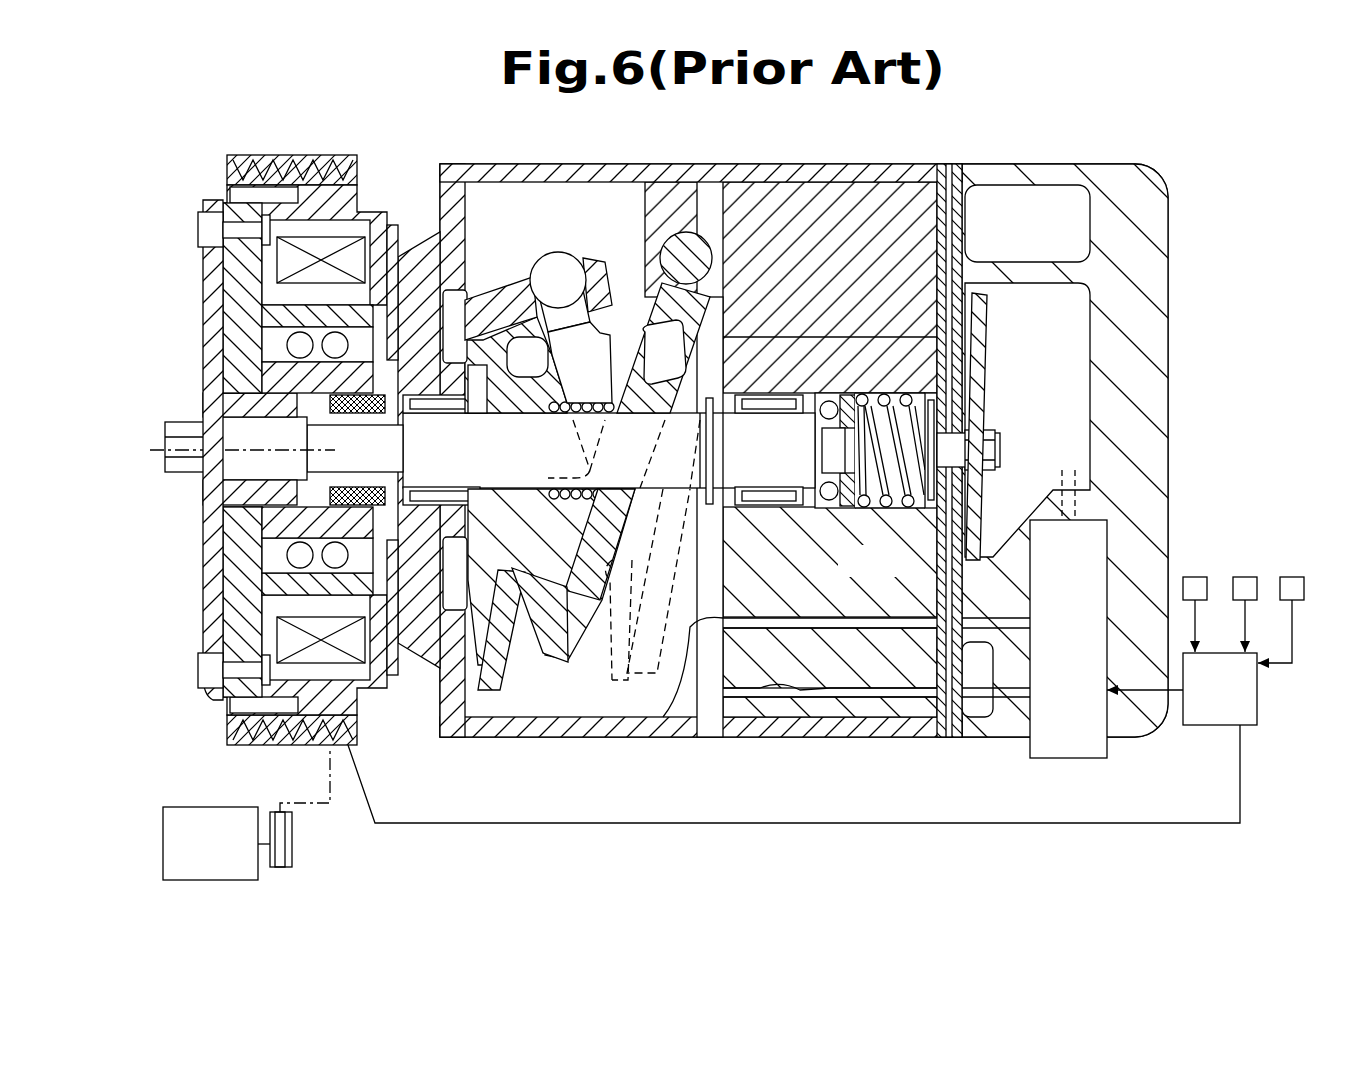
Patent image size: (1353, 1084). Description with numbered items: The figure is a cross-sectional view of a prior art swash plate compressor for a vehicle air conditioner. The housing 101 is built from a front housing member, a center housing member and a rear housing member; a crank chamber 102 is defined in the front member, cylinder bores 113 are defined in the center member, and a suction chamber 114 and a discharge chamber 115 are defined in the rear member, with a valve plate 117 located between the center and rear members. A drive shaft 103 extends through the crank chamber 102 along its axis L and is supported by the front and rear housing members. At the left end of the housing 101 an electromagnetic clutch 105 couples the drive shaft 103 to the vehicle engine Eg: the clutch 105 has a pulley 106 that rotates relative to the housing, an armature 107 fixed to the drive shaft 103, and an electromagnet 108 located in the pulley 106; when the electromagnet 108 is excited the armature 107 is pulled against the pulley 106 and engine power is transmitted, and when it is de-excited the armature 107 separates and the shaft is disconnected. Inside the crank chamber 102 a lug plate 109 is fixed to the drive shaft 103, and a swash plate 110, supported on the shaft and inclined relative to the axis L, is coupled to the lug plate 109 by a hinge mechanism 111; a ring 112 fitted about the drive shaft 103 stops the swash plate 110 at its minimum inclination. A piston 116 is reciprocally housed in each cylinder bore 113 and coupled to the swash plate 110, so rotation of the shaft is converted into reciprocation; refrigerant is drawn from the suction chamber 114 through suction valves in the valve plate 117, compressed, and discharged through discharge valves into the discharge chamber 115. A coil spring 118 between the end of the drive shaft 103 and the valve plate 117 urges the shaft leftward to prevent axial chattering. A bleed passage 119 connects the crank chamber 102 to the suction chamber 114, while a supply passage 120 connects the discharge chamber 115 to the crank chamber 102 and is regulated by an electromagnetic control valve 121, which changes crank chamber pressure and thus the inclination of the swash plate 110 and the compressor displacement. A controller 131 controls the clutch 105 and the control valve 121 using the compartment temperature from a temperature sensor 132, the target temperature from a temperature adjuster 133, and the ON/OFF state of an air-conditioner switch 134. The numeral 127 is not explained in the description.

The housing 101 is at (700, 737).
The crank chamber 102 is at (554, 632).
The drive shaft 103 is at (684, 488).
The electromagnetic clutch 105 is at (222, 170).
The pulley 106 is at (335, 200).
The armature 107 is at (215, 603).
The electromagnet 108 is at (324, 657).
The lug plate 109 is at (485, 675).
The swash plate 110 is at (612, 680).
The hinge mechanism 111 is at (533, 266).
The ring 112 is at (638, 452).
The cylinder bores 113 is at (826, 195).
The suction chamber 114 is at (1026, 451).
The discharge chamber 115 is at (1027, 420).
The piston 116 is at (767, 182).
The valve plate 117 is at (940, 737).
The coil spring 118 is at (862, 507).
The bleed passage 119 is at (765, 697).
The supply passage 120 is at (690, 660).
The electromagnetic control valve 121 is at (1068, 639).
The bolt 127 is at (458, 575).
The controller 131 is at (1258, 708).
The temperature sensor 132 is at (1196, 577).
The temperature adjuster 133 is at (1246, 577).
The air-conditioner switch 134 is at (1292, 577).
The axis L is at (165, 465).
The vehicle engine Eg is at (163, 807).